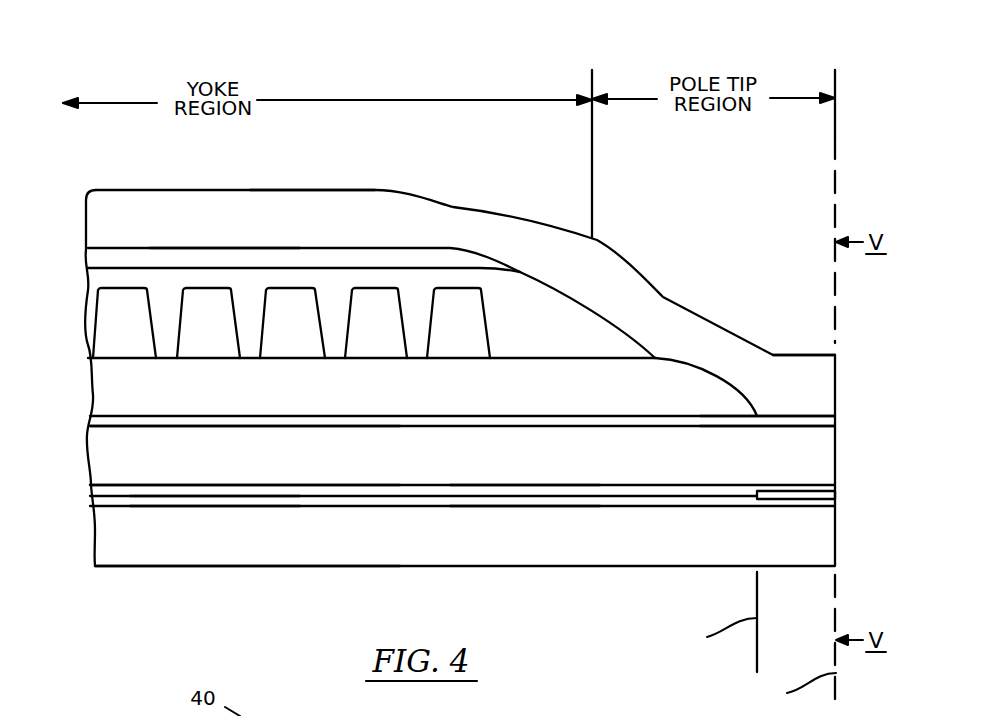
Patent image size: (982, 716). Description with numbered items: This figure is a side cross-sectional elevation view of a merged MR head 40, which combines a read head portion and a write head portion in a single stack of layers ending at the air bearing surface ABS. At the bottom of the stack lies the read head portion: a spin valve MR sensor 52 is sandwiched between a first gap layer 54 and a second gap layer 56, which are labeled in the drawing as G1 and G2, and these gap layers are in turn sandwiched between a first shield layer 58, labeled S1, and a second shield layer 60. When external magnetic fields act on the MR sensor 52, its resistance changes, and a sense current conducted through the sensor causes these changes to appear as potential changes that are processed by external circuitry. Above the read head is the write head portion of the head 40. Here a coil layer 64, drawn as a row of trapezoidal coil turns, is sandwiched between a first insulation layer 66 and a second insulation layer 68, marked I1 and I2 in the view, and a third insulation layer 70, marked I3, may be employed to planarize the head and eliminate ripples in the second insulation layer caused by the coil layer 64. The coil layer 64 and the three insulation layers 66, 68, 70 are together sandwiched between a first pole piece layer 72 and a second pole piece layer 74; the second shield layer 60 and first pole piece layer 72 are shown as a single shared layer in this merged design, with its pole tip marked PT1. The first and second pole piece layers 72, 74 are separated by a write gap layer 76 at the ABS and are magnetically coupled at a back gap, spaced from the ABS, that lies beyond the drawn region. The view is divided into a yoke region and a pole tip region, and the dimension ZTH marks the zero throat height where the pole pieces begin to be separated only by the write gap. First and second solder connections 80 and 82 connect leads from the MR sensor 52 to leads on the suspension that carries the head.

The merged MR head 40 is at (565, 82).
The spin valve MR sensor 52 is at (837, 494).
The first gap layer 54 is at (485, 498).
The second gap layer 56 is at (563, 488).
The first shield layer 58 is at (93, 536).
The second shield layer 60 is at (84, 431).
The coil layer 64 is at (288, 298).
The first insulation layer 66 is at (685, 388).
The second insulation layer 68 is at (128, 283).
The third insulation layer 70 is at (192, 248).
The first pole piece layer 72 is at (103, 453).
The second pole piece layer 74 is at (418, 205).
The write gap layer 76 is at (838, 424).
The first solder connection 80 is at (838, 390).
The second solder connection 82 is at (322, 189).
The first gap layer G1 is at (168, 503).
The second gap layer G2 is at (217, 490).
The first insulation layer I1 is at (395, 387).
The second insulation layer I2 is at (545, 323).
The third insulation layer I3 is at (367, 258).
The first shield layer S1 is at (404, 536).
The first pole tip PT1 is at (794, 448).
The zero throat height ZTH is at (708, 622).
The air bearing surface ABS is at (783, 389).